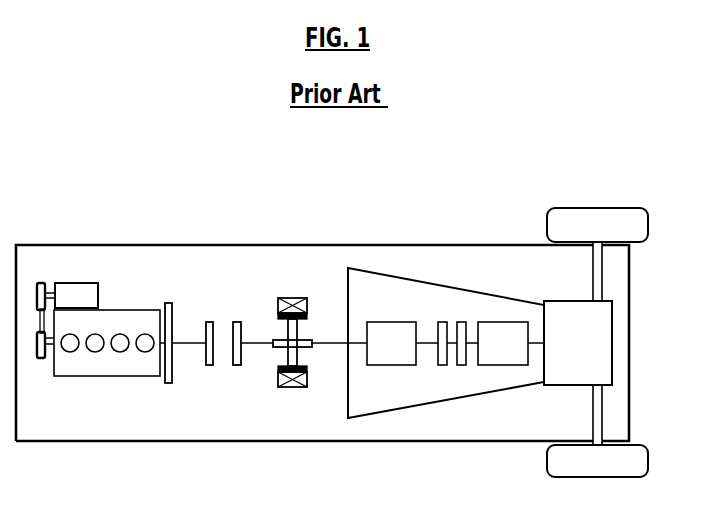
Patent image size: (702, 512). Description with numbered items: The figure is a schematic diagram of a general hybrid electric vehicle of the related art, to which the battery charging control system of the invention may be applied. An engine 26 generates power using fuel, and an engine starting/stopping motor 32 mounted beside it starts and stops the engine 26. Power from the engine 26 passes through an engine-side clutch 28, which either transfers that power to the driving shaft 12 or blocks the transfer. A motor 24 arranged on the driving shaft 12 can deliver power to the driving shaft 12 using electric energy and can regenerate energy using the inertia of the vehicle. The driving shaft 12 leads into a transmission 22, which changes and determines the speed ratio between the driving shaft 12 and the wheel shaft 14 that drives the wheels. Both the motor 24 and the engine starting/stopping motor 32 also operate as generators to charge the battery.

The driving shaft 12 is at (257, 343).
The wheel shaft 14 is at (604, 341).
The transmission 22 is at (447, 287).
The motor 24 is at (292, 298).
The engine 26 is at (107, 472).
The engine-side clutch 28 is at (223, 472).
The engine starting/stopping motor 32 is at (75, 288).